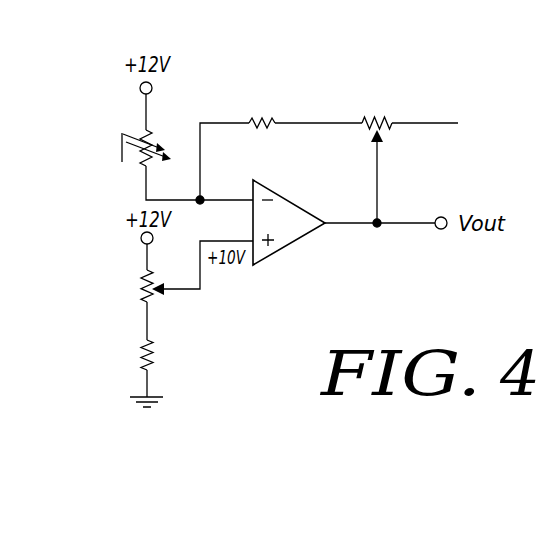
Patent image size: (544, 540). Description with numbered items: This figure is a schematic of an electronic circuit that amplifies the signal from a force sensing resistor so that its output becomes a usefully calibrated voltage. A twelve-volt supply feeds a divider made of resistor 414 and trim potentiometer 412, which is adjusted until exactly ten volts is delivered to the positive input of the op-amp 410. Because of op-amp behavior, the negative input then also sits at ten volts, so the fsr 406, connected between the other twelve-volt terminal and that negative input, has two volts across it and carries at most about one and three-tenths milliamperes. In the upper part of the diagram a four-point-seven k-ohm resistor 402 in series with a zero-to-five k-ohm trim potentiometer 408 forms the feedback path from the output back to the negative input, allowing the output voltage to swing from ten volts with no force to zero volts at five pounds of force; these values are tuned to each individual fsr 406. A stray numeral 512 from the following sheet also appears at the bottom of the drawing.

The 4.7 k-ohm resistor 402 is at (269, 129).
The force sensing resistor 406 is at (170, 124).
The 0–5 k-ohm trim potentiometer 408 is at (394, 130).
The op-amp 410 is at (300, 236).
The trim potentiometer 412 is at (156, 298).
The resistor 414 is at (155, 355).
The component of FIG. 5 512 is at (368, 538).